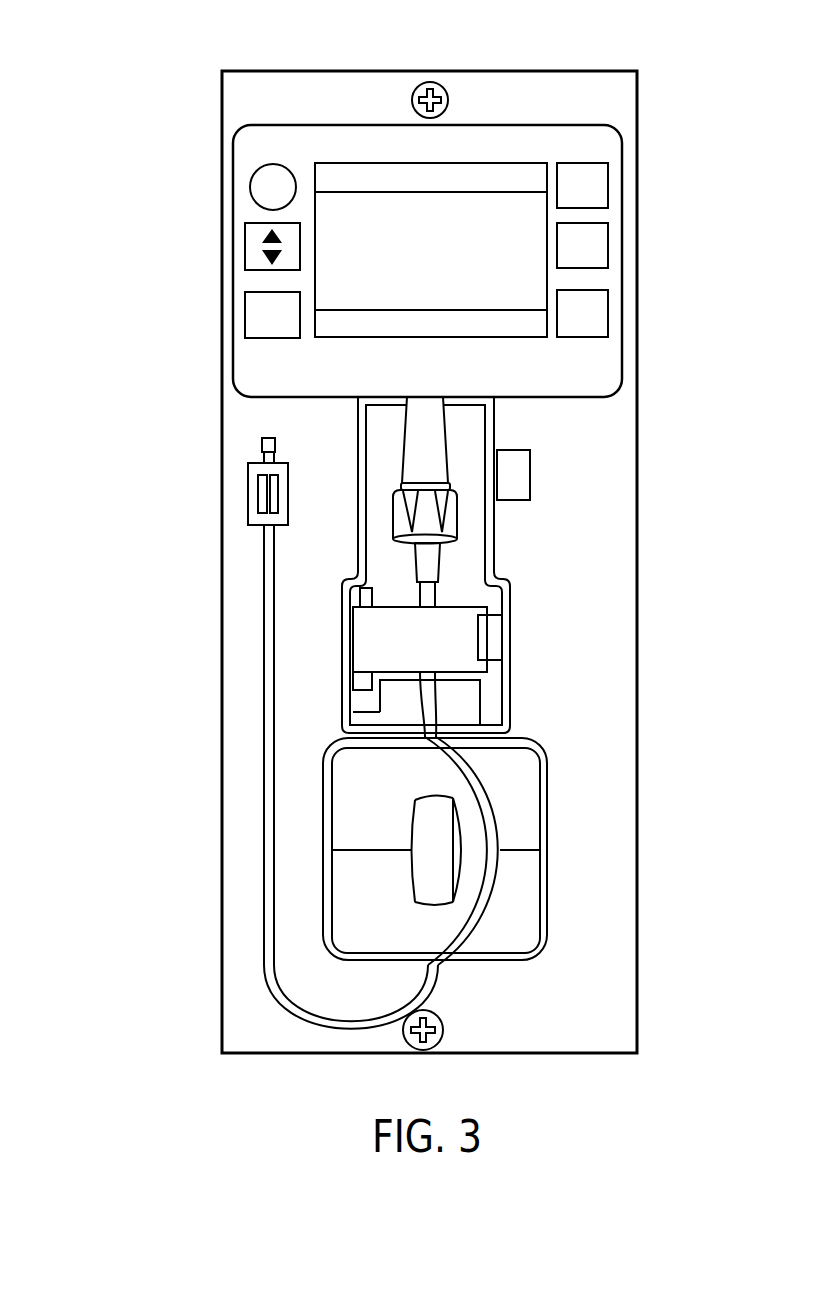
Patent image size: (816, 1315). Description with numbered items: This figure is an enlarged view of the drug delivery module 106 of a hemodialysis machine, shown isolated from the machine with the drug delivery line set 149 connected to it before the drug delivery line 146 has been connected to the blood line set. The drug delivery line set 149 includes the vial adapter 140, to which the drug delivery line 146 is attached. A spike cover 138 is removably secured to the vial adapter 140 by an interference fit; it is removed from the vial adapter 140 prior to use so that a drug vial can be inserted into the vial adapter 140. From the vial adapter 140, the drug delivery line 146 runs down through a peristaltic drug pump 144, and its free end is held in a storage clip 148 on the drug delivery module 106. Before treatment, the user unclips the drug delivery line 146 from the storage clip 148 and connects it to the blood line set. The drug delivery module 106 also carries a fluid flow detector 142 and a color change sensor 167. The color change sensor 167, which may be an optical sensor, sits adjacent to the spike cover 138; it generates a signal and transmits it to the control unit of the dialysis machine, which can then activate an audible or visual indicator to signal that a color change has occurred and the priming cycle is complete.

The drug delivery module 106 is at (607, 71).
The spike cover 138 is at (438, 424).
The vial adapter 140 is at (447, 513).
The fluid flow detector 142 is at (508, 645).
The peristaltic drug pump 144 is at (545, 896).
The drug delivery line 146 is at (263, 813).
The storage clip 148 is at (250, 493).
The drug delivery line set 149 is at (276, 1010).
The color change sensor 167 is at (530, 467).